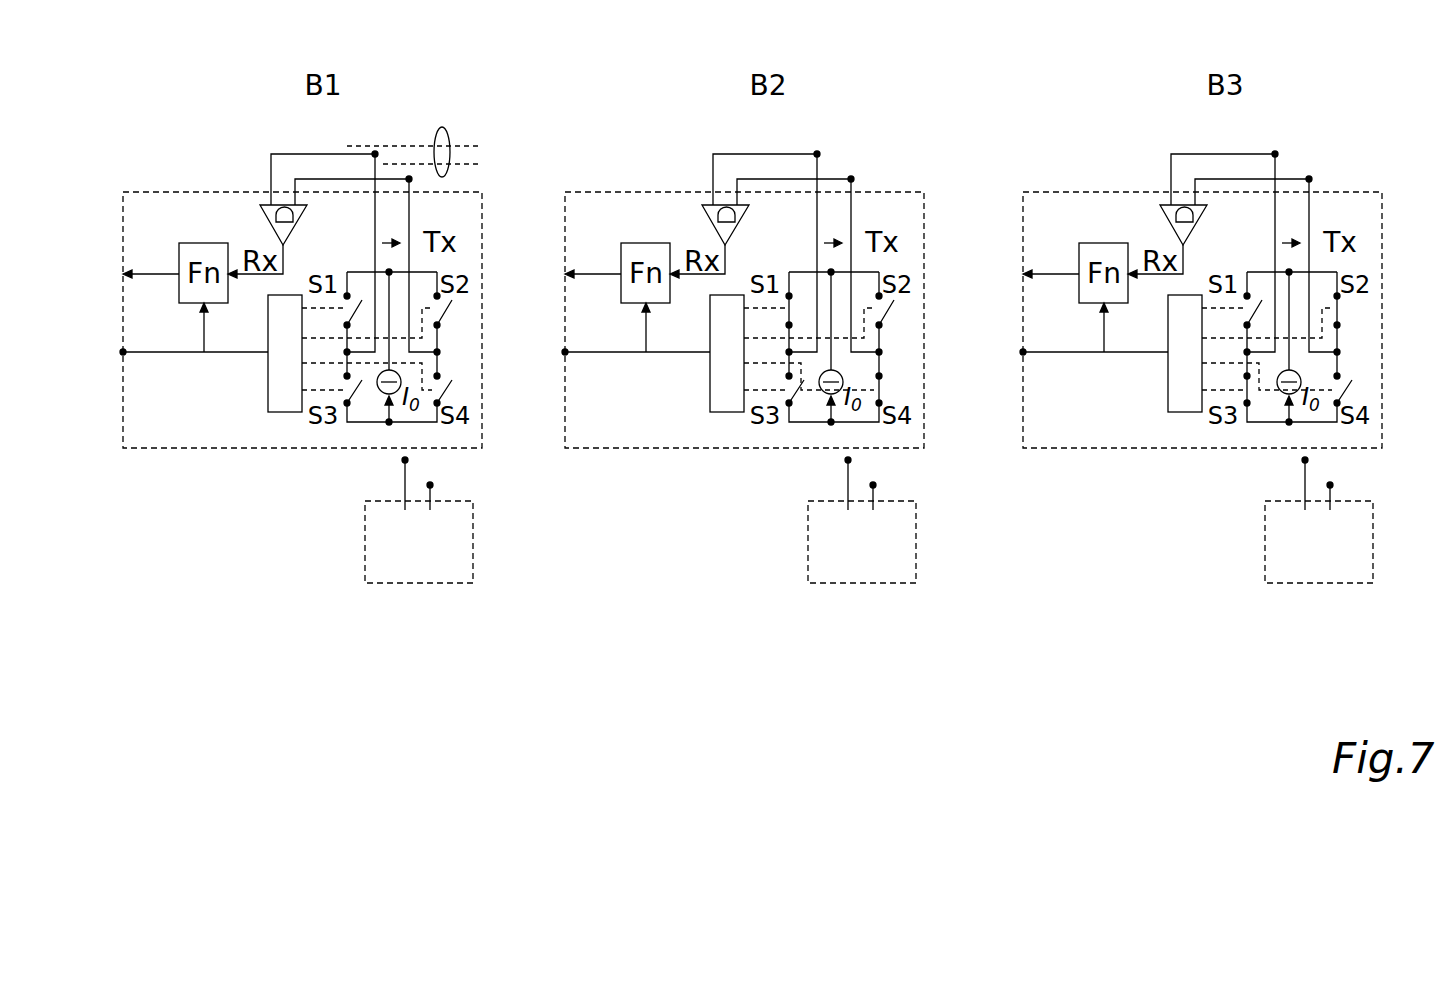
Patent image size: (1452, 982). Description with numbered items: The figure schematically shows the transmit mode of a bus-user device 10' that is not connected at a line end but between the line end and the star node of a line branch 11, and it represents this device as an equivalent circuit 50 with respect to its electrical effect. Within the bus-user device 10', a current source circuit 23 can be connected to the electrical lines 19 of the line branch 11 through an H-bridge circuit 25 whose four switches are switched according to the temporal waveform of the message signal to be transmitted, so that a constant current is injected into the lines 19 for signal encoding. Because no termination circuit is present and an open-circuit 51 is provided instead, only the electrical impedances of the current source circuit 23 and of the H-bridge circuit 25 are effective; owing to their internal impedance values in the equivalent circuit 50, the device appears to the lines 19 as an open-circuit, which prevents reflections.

The line branch 11 is at (441, 128).
The electrical lines 19 is at (457, 142).
The open-circuit 51 is at (392, 226).
The bus-user device 10' is at (339, 320).
The current source circuit 23 is at (389, 397).
The H-bridge circuit 25 is at (440, 433).
The equivalent circuit 50 is at (422, 583).